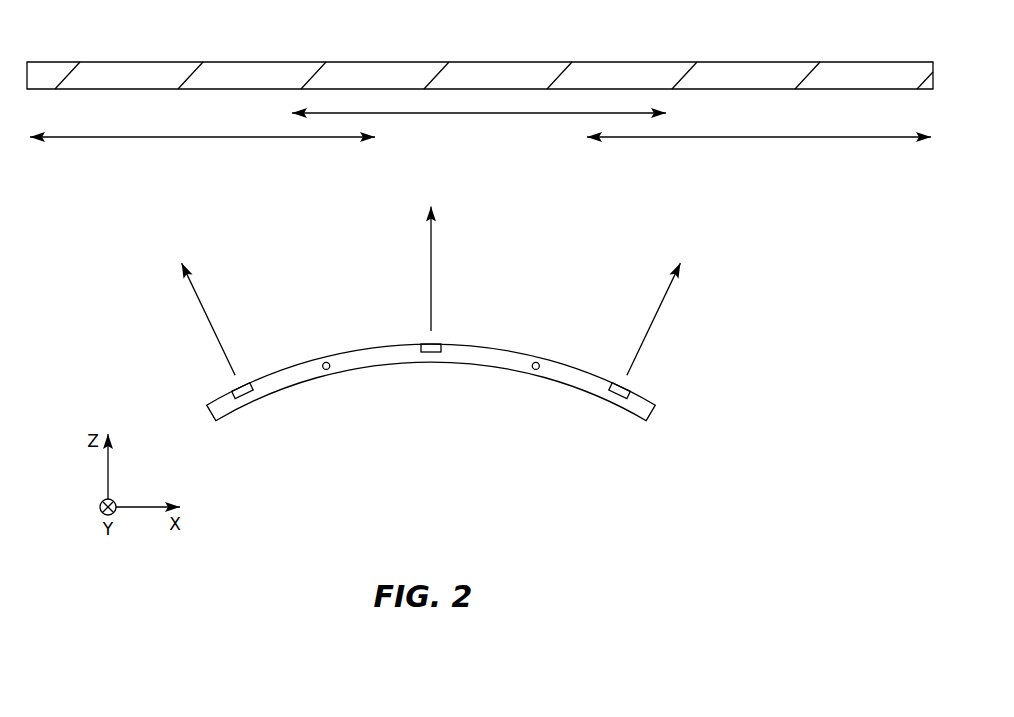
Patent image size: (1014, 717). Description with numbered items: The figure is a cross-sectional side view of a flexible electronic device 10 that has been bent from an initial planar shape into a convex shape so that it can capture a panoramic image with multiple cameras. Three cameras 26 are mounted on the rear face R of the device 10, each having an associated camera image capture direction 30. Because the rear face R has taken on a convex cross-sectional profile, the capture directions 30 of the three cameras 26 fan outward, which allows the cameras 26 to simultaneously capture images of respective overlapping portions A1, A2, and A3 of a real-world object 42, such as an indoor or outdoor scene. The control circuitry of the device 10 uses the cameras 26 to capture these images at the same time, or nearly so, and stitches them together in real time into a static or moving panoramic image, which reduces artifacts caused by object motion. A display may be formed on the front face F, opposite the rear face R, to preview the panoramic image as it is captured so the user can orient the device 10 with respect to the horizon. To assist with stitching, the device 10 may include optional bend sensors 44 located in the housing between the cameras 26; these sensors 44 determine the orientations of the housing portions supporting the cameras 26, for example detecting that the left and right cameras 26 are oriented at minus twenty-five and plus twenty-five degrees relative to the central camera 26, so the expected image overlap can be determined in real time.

The flexible electronic device 10 is at (649, 415).
The cameras 26 is at (243, 385).
The camera image capture directions 30 is at (203, 297).
The real-world object 42 is at (538, 62).
The bend sensors 44 is at (326, 370).
The first overlapping portion of real-world object A1 is at (200, 138).
The second overlapping portion of real-world object A2 is at (495, 114).
The third overlapping portion of real-world object A3 is at (758, 138).
The rear face R is at (560, 328).
The front face F is at (559, 418).